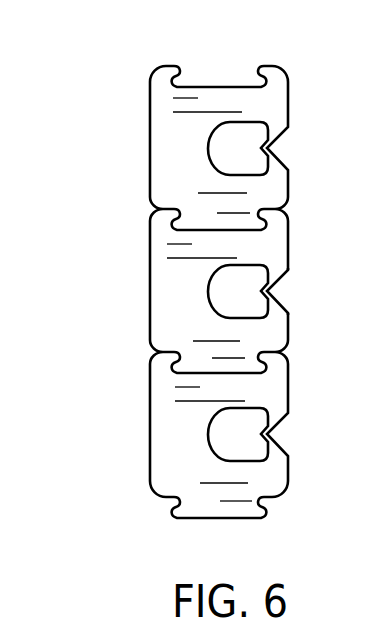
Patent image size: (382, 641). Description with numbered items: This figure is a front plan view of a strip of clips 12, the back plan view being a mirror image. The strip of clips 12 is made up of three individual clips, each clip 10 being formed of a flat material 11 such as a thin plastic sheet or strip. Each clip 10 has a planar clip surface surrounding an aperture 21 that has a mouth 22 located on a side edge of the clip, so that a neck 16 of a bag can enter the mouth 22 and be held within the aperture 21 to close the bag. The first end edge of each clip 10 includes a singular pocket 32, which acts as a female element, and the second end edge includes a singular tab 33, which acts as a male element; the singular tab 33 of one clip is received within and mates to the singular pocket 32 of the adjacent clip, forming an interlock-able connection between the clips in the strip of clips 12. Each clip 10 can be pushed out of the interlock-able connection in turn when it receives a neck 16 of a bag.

The clip 10 is at (158, 258).
The flat material 11 is at (162, 137).
The strip of clips 12 is at (93, 302).
The neck 16 is at (158, 447).
The aperture 21 is at (237, 285).
The mouth 22 is at (268, 292).
The singular pocket 32 is at (220, 87).
The singular tab 33 is at (255, 512).